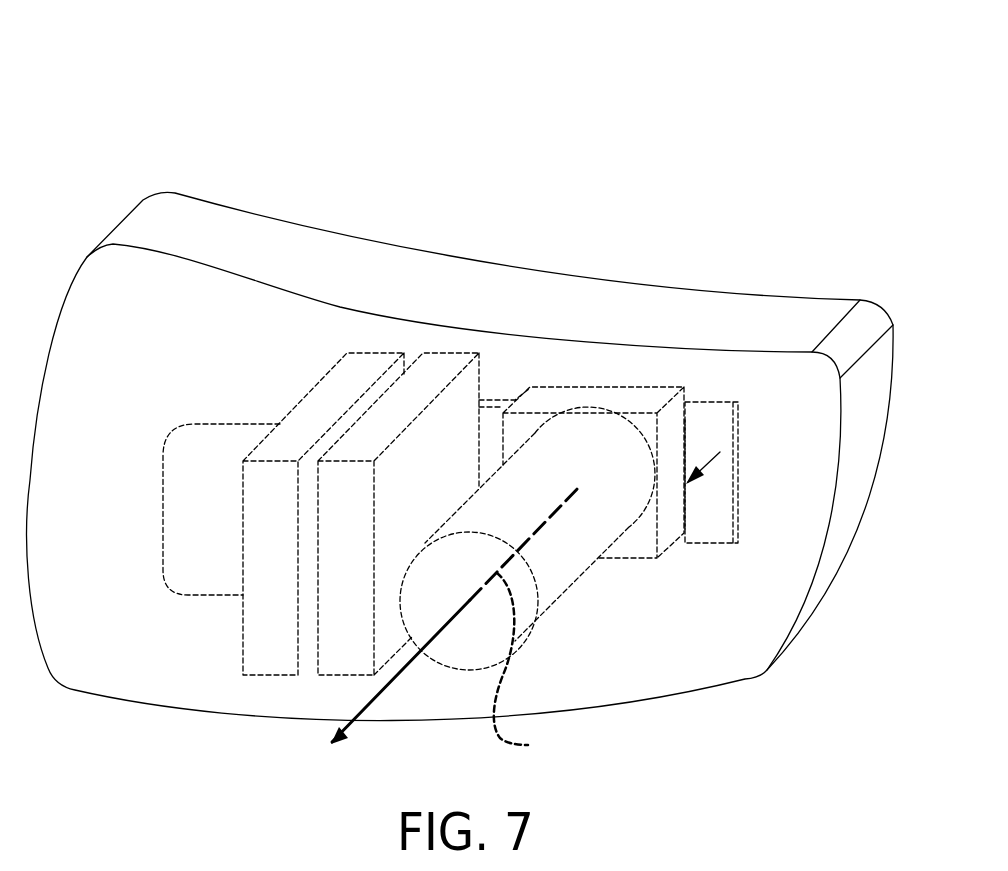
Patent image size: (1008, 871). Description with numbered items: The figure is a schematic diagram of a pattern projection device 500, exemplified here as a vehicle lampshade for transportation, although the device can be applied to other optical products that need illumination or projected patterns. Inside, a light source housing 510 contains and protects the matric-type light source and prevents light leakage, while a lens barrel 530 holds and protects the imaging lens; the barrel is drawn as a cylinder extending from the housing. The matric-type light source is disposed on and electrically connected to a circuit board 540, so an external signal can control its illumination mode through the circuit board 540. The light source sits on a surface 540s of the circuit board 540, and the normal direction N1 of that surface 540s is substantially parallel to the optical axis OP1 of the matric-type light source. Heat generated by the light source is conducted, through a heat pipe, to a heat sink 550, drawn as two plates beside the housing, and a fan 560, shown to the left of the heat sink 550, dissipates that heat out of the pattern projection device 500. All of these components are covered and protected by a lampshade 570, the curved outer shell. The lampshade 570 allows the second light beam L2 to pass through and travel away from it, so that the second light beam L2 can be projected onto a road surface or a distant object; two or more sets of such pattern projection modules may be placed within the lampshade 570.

The pattern projection device 500 is at (190, 90).
The light source housing 510 is at (632, 558).
The lens barrel 530 is at (560, 608).
The circuit board 540 is at (703, 547).
The surface 540s is at (708, 513).
The heat sink 550 is at (270, 675).
The fan 560 is at (218, 580).
The lampshade 570 is at (117, 223).
The second light beam L2 is at (392, 683).
The optical axis OP1 is at (535, 667).
The normal direction N1 is at (705, 468).